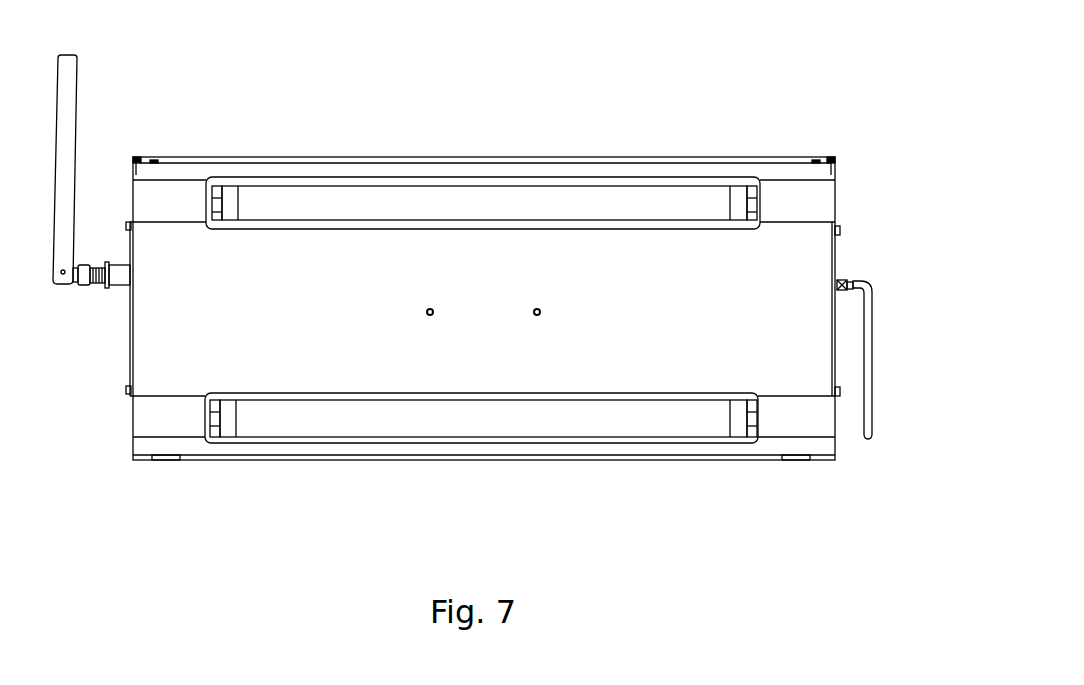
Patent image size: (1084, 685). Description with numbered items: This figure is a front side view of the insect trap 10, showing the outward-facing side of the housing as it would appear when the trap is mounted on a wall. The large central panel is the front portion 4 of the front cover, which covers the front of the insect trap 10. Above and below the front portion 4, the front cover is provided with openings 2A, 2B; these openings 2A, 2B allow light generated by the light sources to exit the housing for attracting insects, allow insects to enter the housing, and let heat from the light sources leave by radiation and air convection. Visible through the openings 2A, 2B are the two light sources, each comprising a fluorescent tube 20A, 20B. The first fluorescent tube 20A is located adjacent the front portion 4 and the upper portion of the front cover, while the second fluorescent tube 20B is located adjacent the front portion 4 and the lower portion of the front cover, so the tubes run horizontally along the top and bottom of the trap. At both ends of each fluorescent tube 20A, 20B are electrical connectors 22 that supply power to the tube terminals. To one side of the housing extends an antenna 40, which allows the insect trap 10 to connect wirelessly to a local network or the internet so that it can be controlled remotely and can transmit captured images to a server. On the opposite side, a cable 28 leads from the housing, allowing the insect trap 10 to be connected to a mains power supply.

The insect trap 10 is at (673, 100).
The front portion 4 is at (198, 365).
The opening 2A is at (313, 178).
The opening 2B is at (290, 442).
The fluorescent tube 20A is at (450, 207).
The fluorescent tube 20B is at (362, 418).
The electrical connectors 22 is at (218, 180).
The antenna 40 is at (68, 145).
The cable 28 is at (873, 397).